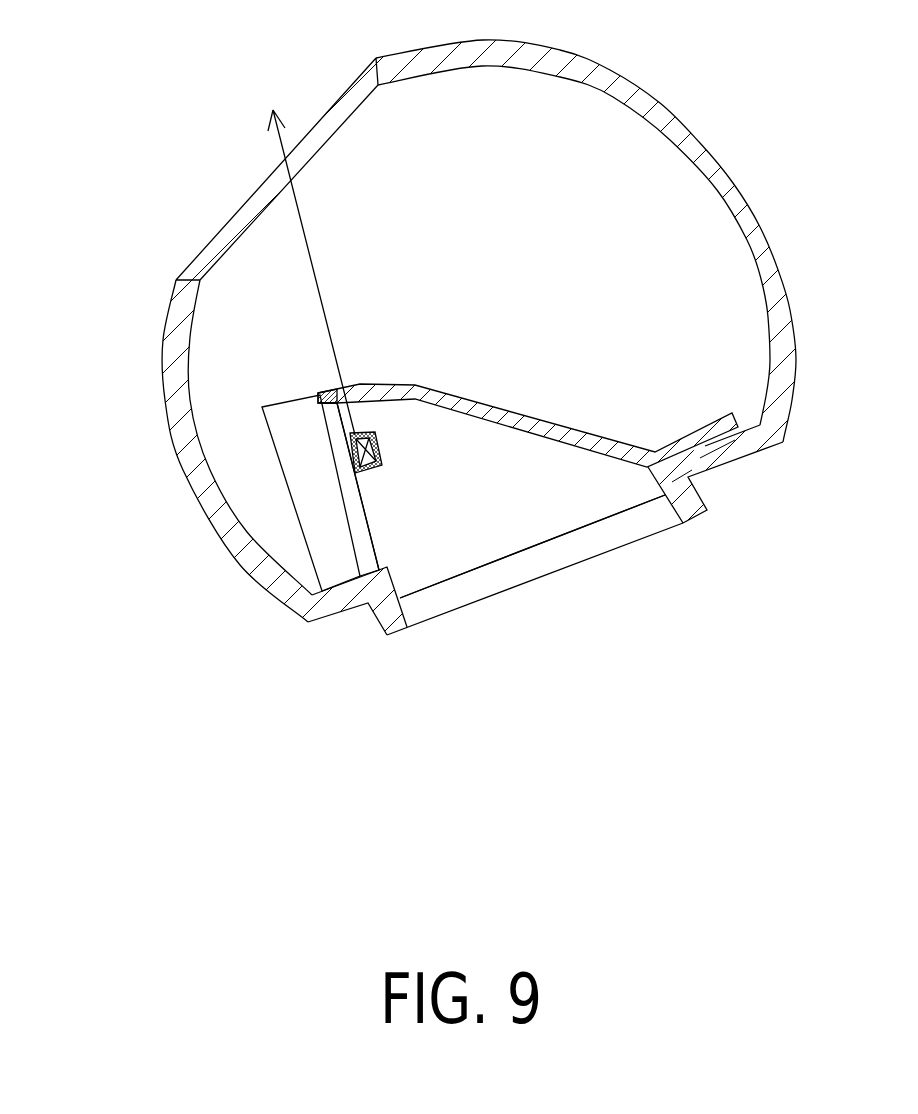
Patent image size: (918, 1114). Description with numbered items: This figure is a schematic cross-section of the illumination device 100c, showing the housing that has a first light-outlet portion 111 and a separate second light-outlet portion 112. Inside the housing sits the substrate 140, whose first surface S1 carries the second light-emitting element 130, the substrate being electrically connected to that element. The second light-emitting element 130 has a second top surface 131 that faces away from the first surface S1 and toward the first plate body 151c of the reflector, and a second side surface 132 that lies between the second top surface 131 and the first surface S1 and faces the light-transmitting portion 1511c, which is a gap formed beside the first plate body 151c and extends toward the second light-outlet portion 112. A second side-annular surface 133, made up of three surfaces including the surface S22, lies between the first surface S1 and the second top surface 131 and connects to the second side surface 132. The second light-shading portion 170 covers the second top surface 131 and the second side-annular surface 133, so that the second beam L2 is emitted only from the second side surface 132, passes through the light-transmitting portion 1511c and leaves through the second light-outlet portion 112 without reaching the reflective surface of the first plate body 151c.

The illumination device 100c is at (122, 39).
The first light-outlet portion 111 is at (657, 528).
The second light-outlet portion 112 is at (340, 108).
The second light-emitting element 130 is at (472, 500).
The second top surface 131 is at (327, 453).
The second side surface 132 is at (338, 413).
The second side-annular surface 133 is at (350, 462).
The surface of the second light-emitting element S22 is at (208, 486).
The first surface S1 is at (370, 517).
The substrate 140 is at (372, 552).
The first plate body 151c is at (585, 428).
The light-transmitting portion 1511c is at (332, 393).
The second light-shading portion 170 is at (385, 462).
The second beam L2 is at (280, 146).